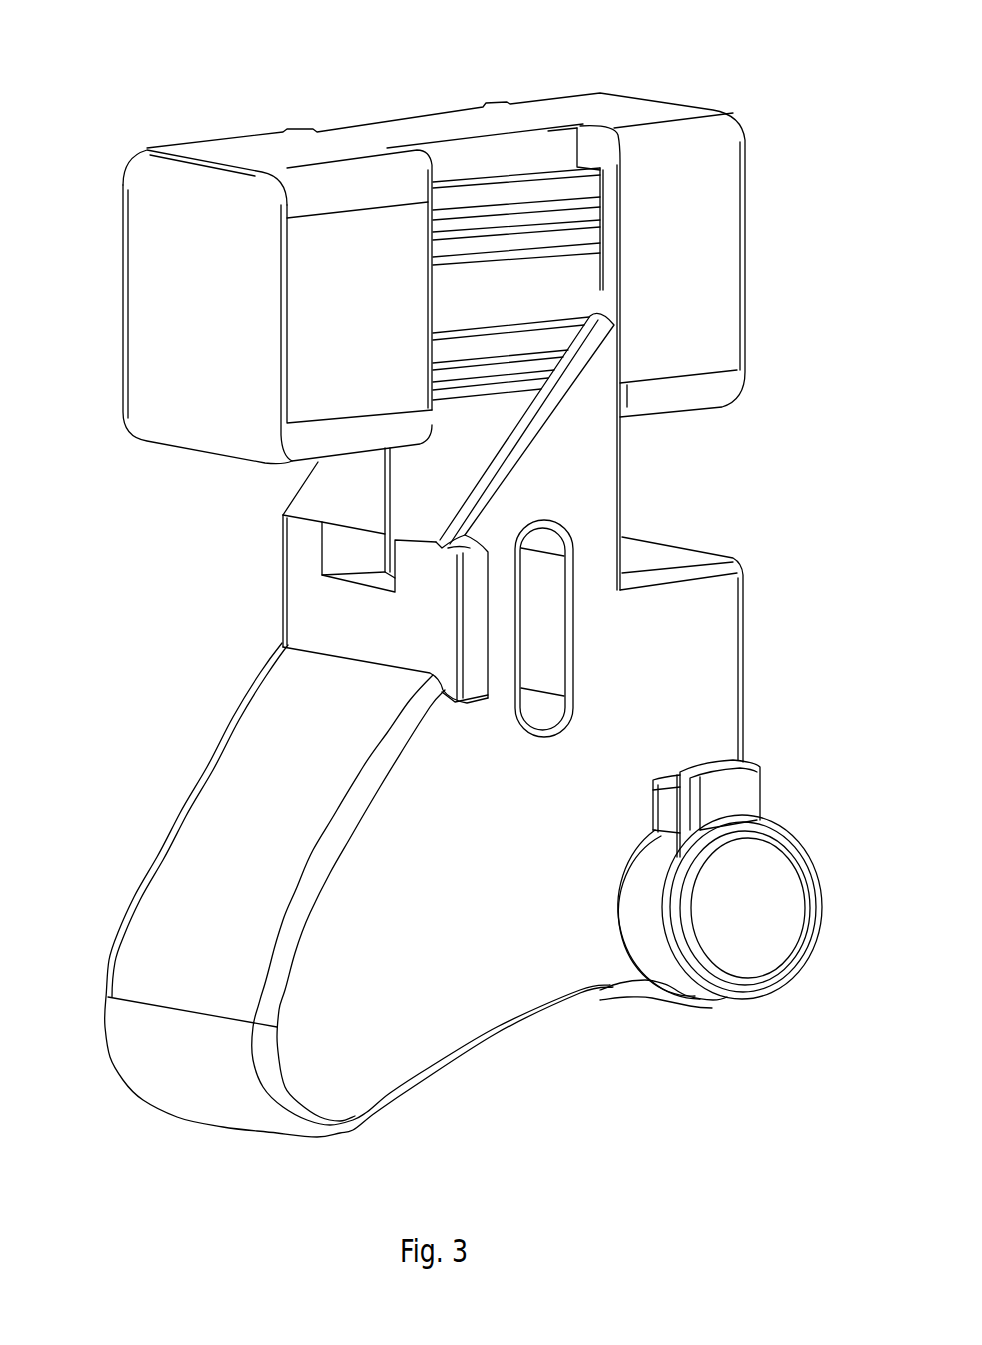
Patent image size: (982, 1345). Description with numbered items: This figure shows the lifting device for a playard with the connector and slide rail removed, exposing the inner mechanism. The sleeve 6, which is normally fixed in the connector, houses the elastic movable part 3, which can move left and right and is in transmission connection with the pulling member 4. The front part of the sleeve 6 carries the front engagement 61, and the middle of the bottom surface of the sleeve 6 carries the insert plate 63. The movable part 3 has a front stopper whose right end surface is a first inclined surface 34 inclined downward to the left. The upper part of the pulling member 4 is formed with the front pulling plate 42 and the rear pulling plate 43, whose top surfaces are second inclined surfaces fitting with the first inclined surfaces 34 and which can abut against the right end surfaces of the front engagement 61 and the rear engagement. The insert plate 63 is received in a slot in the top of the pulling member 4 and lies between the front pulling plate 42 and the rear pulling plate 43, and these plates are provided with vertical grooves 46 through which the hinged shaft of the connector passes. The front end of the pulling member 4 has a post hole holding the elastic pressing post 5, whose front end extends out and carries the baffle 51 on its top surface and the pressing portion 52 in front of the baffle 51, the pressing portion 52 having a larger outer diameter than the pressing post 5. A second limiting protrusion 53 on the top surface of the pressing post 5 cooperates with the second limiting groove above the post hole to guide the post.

The movable part 3 is at (543, 232).
The pulling member 4 is at (372, 1045).
The pressing post 5 is at (647, 922).
The sleeve 6 is at (150, 225).
The first inclined surfaces 34 is at (593, 293).
The front pulling plate 42 is at (583, 447).
The rear pulling plate 43 is at (366, 492).
The vertical grooves 46 is at (548, 617).
The baffle 51 is at (740, 793).
The pressing portion 52 is at (747, 933).
The second limiting protrusion 53 is at (667, 807).
The front engagement 61 is at (587, 157).
The insert plate 63 is at (405, 488).